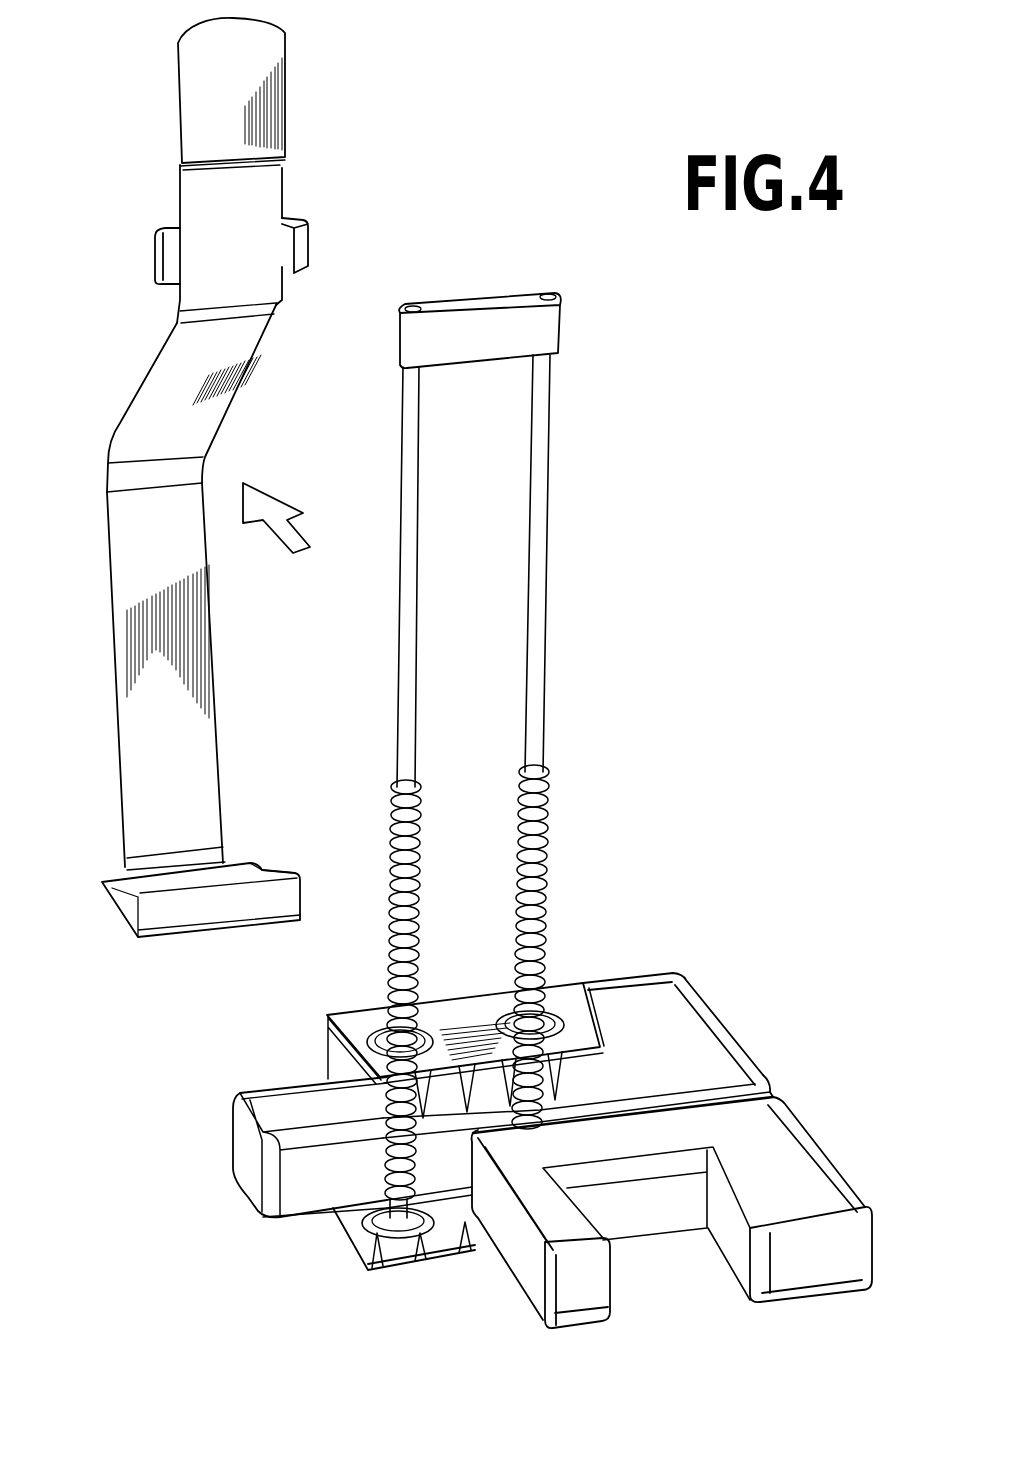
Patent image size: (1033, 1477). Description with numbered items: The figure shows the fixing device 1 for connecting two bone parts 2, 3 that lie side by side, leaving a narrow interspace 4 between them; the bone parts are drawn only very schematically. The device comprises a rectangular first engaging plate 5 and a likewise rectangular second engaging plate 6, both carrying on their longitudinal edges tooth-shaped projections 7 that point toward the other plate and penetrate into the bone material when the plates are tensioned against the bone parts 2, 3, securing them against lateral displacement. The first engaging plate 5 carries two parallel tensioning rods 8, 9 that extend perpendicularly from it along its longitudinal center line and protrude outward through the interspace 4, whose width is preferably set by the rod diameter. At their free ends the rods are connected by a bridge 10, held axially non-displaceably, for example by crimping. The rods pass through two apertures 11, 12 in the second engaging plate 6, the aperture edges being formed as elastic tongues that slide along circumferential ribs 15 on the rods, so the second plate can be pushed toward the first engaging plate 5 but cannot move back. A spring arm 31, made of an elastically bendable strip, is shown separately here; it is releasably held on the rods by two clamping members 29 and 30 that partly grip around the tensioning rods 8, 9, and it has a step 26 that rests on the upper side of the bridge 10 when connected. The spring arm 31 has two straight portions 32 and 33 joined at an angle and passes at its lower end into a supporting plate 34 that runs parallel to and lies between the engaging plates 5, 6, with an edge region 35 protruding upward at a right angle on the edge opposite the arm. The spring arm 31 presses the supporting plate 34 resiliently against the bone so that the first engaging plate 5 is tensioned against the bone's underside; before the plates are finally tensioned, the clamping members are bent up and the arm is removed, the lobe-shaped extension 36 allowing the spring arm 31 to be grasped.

The fixing device 1 is at (557, 946).
The bone part 2 is at (717, 1035).
The bone part 3 is at (805, 1156).
The interspace 4 is at (768, 1084).
The first engaging plate 5 is at (362, 1237).
The second engaging plate 6 is at (357, 1020).
The tooth-shaped projections 7 is at (458, 1226).
The tensioning rod 8 is at (407, 495).
The tensioning rod 9 is at (540, 510).
The bridge 10 is at (505, 317).
The aperture 11 is at (421, 1038).
The aperture 12 is at (546, 1018).
The circumferential ribs 15 is at (418, 810).
The step 26 is at (268, 170).
The clamping member 29 is at (160, 260).
The clamping member 30 is at (308, 248).
The spring arm 31 is at (123, 418).
The straight portion 32 is at (242, 370).
The straight portion 33 is at (203, 677).
The supporting plate 34 is at (127, 902).
The edge region 35 is at (276, 890).
The extension 36 is at (265, 42).